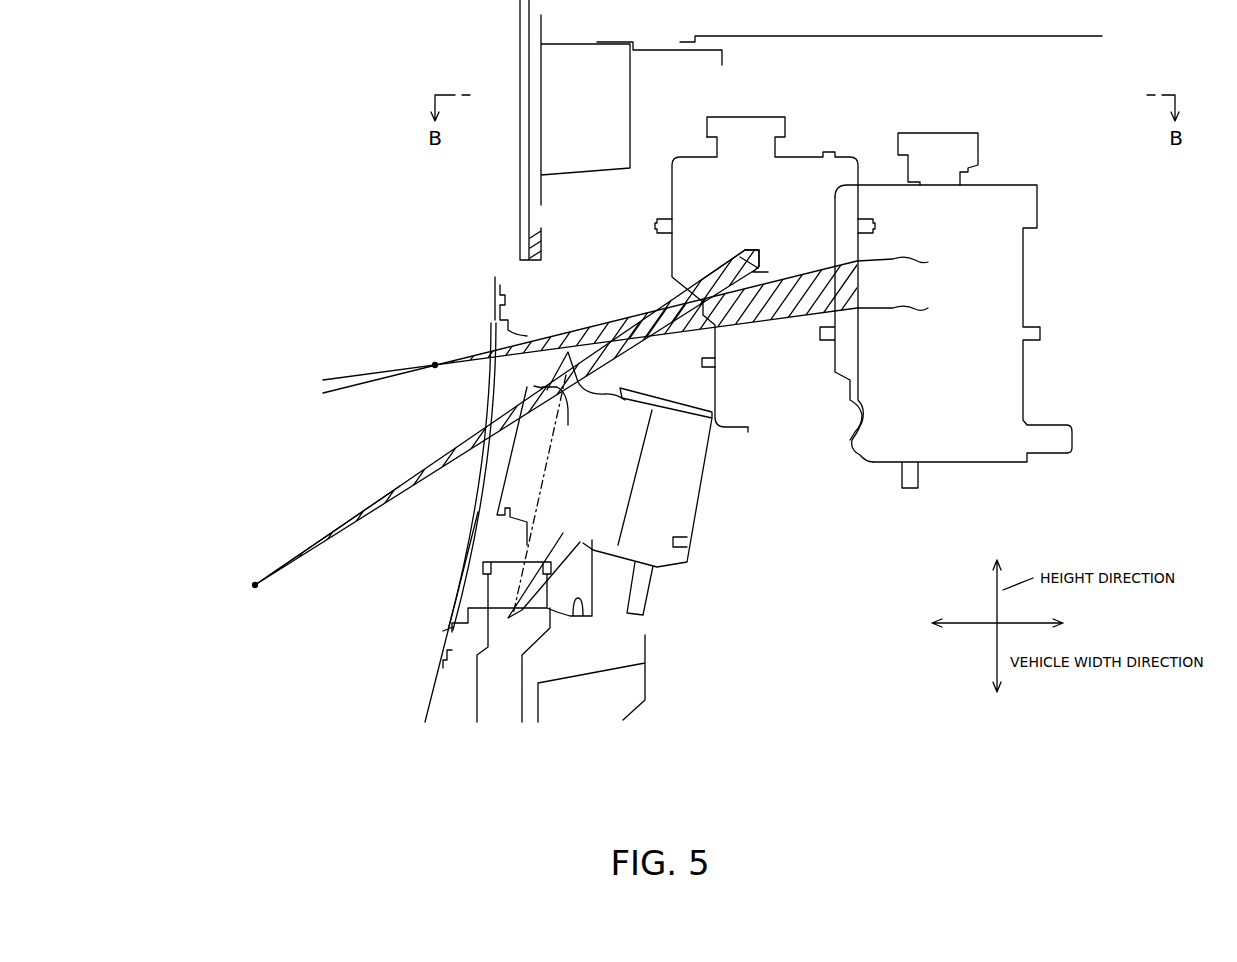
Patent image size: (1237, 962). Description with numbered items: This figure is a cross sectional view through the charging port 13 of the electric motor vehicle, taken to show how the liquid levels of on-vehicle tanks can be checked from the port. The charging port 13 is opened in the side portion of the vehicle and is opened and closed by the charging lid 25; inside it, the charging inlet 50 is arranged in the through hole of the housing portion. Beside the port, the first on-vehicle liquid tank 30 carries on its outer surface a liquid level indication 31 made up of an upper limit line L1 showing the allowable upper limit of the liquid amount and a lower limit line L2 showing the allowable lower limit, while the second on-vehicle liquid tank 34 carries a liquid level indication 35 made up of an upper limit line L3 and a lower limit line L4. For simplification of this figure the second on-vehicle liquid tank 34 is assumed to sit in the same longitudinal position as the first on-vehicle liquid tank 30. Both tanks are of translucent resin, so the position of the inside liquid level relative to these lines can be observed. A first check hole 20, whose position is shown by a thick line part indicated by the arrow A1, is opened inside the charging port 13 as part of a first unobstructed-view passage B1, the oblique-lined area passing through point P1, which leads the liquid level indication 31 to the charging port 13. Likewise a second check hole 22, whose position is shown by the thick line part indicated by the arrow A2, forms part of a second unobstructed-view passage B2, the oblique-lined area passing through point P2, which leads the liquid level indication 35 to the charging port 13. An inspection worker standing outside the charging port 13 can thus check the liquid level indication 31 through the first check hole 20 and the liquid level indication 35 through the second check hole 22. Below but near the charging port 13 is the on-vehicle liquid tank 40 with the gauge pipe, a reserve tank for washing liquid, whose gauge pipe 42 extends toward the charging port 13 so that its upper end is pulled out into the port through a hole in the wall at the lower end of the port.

The charging port 13 is at (585, 610).
The first check hole 20 is at (545, 338).
The second check hole 22 is at (552, 400).
The charging lid 25 is at (443, 586).
The first on-vehicle liquid tank 30 is at (937, 132).
The liquid level indication 31 is at (882, 262).
The second on-vehicle liquid tank 34 is at (762, 115).
The liquid level indication 35 is at (760, 246).
The on-vehicle liquid tank with the gauge pipe 40 is at (467, 713).
The gauge pipe 42 is at (477, 685).
The charging inlet 50 is at (600, 498).
The arrow A1 is at (541, 319).
The arrow A2 is at (539, 372).
The first unobstructed-view passage B1 is at (637, 312).
The second unobstructed-view passage B2 is at (403, 478).
The upper limit line L1 is at (639, 321).
The lower limit line L2 is at (639, 338).
The upper limit line L3 is at (757, 249).
The lower limit line L4 is at (770, 271).
The point P1 is at (435, 361).
The point P2 is at (255, 581).